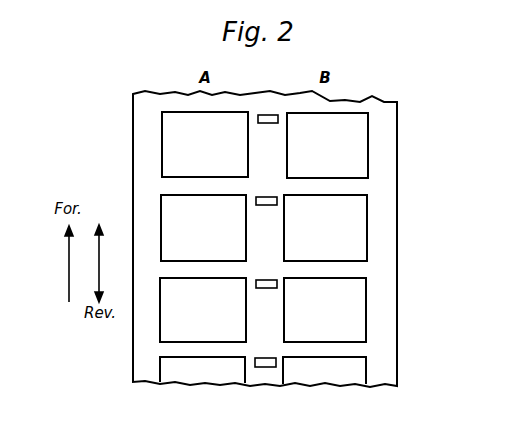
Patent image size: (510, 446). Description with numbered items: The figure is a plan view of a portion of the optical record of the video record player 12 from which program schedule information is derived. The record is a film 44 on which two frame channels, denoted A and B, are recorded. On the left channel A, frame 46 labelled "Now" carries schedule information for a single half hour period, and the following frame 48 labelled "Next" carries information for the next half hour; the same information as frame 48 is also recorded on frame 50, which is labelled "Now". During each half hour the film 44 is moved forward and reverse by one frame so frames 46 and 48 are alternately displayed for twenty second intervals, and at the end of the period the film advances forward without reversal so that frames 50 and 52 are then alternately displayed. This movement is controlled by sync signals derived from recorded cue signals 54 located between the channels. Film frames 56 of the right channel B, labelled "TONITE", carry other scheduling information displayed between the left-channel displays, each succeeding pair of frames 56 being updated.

The video record player 12 is at (263, 240).
The film 44 is at (399, 123).
The frame 46 is at (162, 137).
The frame 48 is at (162, 208).
The frame 50 is at (160, 328).
The frame 52 is at (160, 369).
The cue signals 54 is at (271, 116).
The film frames 56 is at (352, 160).